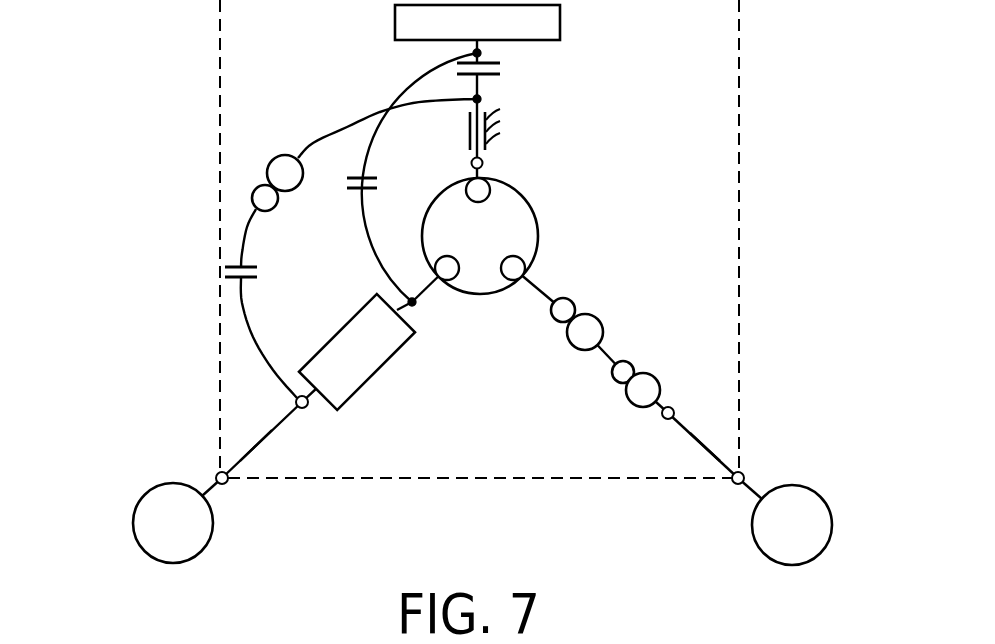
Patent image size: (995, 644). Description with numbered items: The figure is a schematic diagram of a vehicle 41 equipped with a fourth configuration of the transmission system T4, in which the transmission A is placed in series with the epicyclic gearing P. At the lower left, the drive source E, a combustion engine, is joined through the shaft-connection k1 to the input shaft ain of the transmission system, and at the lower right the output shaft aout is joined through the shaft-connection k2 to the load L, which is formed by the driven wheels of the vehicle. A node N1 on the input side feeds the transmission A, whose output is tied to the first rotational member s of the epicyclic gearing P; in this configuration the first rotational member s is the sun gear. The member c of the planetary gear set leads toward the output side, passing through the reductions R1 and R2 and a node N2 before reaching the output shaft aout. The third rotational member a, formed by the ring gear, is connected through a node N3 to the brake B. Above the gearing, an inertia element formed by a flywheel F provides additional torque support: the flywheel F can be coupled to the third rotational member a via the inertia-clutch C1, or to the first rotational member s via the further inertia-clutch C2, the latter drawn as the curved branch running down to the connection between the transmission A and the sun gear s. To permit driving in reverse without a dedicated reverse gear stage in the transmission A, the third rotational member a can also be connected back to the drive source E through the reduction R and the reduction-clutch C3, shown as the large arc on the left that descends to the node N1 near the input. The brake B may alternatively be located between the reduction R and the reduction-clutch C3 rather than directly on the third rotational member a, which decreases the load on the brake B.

The vehicle 41 is at (107, 143).
The flywheel F is at (477, 34).
The inertia-clutch C1 is at (500, 76).
The brake B is at (497, 128).
The third node N3 is at (483, 163).
The third rotational member a is at (476, 190).
The epicyclic gearing P is at (480, 236).
The first rotational member s is at (446, 268).
The terminal c is at (514, 268).
The further inertia-clutch C2 is at (412, 179).
The reduction R is at (262, 185).
The transmission system T4 is at (217, 263).
The reduction-clutch C3 is at (260, 252).
The transmission A is at (357, 352).
The first node N1 is at (311, 410).
The shaft-connection k1 is at (216, 473).
The input shaft ain is at (257, 448).
The drive source E is at (173, 523).
The first resistor R1 is at (573, 313).
The second resistor R2 is at (638, 372).
The second node N2 is at (665, 418).
The shaft-connection k2 is at (742, 473).
The output shaft aout is at (720, 462).
The load L is at (792, 525).